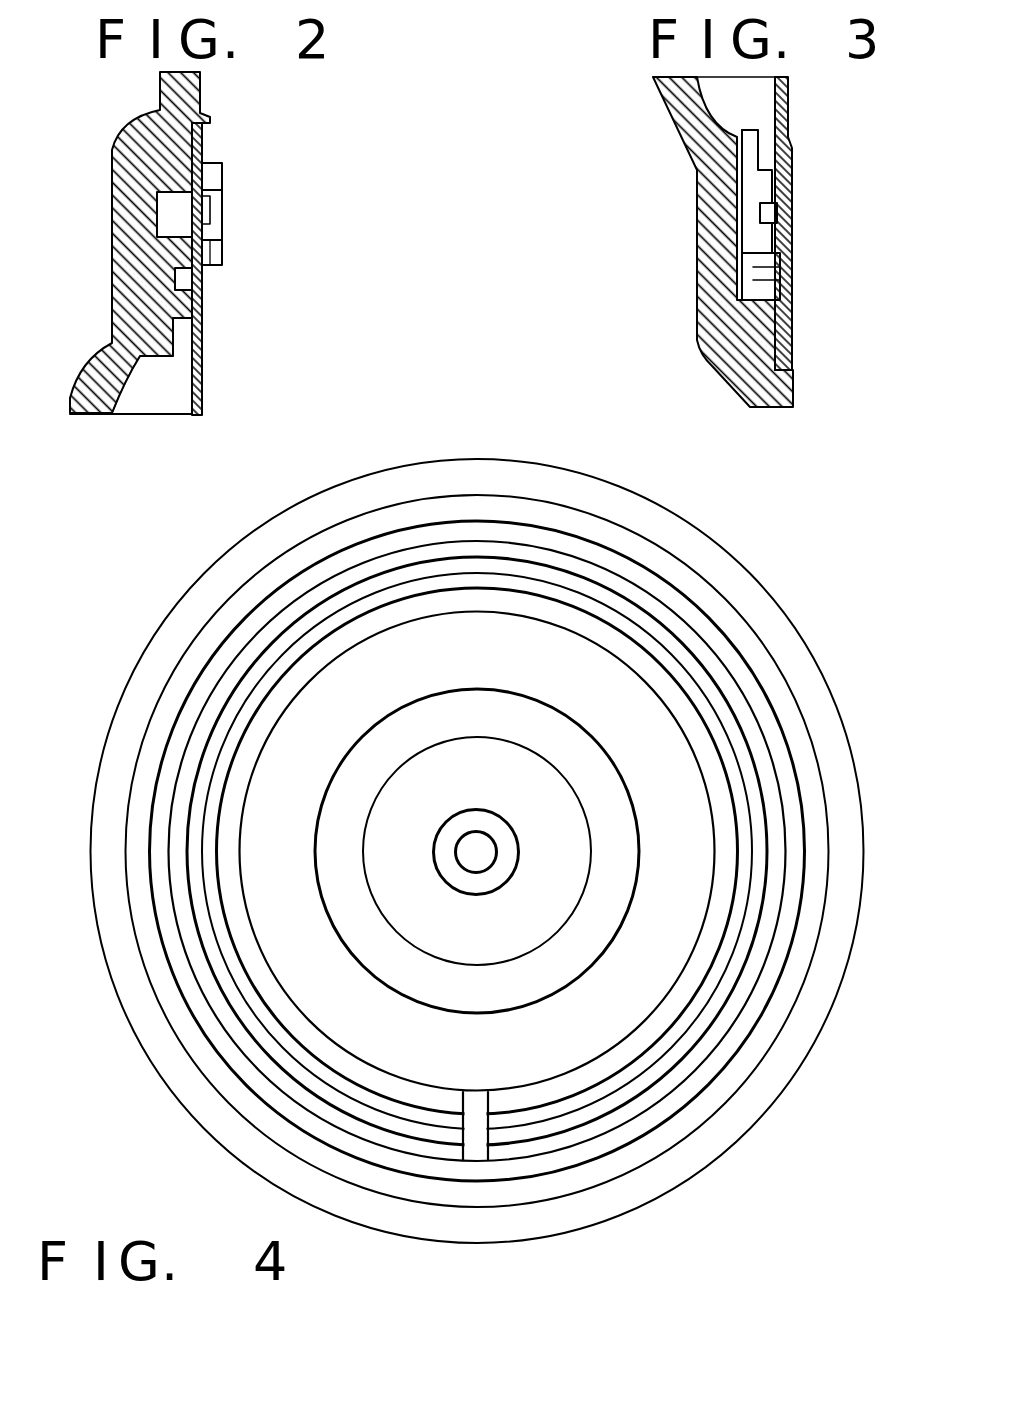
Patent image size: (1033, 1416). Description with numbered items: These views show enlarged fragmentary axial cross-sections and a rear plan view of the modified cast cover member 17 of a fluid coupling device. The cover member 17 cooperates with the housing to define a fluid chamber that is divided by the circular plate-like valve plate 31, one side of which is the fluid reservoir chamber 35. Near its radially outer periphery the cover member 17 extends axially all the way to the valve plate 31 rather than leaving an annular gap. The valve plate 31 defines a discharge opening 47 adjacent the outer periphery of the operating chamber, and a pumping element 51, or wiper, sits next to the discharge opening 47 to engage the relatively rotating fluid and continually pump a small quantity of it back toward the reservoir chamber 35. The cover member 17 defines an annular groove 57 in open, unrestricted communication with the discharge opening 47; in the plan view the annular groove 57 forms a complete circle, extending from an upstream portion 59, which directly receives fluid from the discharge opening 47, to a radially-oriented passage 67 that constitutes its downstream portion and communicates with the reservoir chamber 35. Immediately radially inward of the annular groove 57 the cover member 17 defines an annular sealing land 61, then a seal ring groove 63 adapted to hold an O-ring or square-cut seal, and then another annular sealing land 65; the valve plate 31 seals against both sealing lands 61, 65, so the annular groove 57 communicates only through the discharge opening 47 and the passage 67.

In FIG. 2, the cover member 17 is at (118, 158).
In FIG. 3, the cover member 17 is at (715, 205).
In FIG. 4, the cover member 17 is at (293, 500).
In FIG. 2, the valve plate 31 is at (204, 355).
In FIG. 3, the valve plate 31 is at (787, 112).
In FIG. 2, the fluid reservoir chamber 35 is at (162, 397).
In FIG. 3, the fluid reservoir chamber 35 is at (748, 90).
In FIG. 4, the fluid reservoir chamber 35 is at (305, 952).
In FIG. 2, the discharge opening 47 is at (198, 215).
In FIG. 2, the pumping element 51 is at (215, 183).
In FIG. 3, the annular groove 57 is at (758, 280).
In FIG. 4, the annular groove 57 is at (178, 740).
In FIG. 2, the upstream portion 59 is at (173, 217).
In FIG. 4, the upstream portion 59 is at (473, 533).
In FIG. 2, the annular sealing land 61 is at (223, 247).
In FIG. 3, the annular sealing land 61 is at (782, 238).
In FIG. 4, the annular sealing land 61 is at (280, 622).
In FIG. 2, the seal ring groove 63 is at (182, 277).
In FIG. 3, the seal ring groove 63 is at (770, 215).
In FIG. 4, the seal ring groove 63 is at (493, 565).
In FIG. 2, the annular sealing land 65 is at (203, 302).
In FIG. 3, the annular sealing land 65 is at (782, 190).
In FIG. 4, the annular sealing land 65 is at (685, 673).
In FIG. 3, the radially-oriented passage 67 is at (750, 193).
In FIG. 4, the radially-oriented passage 67 is at (482, 1113).